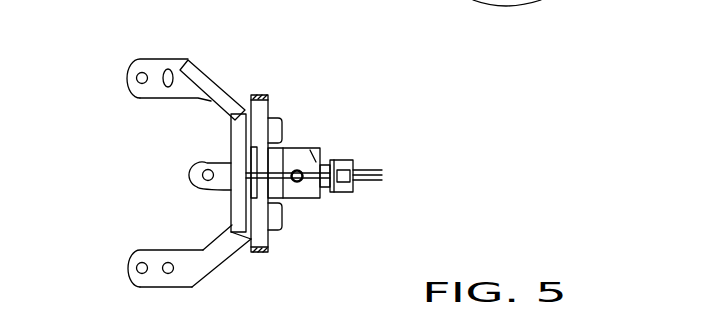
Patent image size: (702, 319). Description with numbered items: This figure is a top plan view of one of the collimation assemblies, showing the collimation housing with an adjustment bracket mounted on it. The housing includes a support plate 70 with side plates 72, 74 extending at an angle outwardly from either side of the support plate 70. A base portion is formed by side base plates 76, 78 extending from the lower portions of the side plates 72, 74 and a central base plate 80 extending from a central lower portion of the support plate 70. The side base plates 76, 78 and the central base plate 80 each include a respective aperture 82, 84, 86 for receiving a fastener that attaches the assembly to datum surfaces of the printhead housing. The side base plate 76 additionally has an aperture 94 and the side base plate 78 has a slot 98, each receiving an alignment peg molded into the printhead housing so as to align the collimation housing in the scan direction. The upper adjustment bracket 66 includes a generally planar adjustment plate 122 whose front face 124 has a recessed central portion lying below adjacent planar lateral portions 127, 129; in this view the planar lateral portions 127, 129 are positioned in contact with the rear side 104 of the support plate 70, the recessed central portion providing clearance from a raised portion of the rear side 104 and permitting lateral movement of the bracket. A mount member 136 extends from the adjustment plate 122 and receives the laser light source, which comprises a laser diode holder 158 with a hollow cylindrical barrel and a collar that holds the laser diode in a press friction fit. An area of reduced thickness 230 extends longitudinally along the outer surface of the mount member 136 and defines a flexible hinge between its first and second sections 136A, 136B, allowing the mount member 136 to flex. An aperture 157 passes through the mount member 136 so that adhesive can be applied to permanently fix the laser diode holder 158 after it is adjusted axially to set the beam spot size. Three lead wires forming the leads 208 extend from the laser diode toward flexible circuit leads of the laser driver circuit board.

The upper adjustment bracket 66 is at (289, 254).
The support plate 70 is at (195, 206).
The side plate 72 is at (164, 228).
The side plate 74 is at (212, 60).
The side base plate 76 is at (135, 281).
The side base plate 78 is at (140, 53).
The central base plate 80 is at (168, 168).
The aperture 82 is at (106, 255).
The aperture 84 is at (105, 67).
The aperture 86 is at (201, 158).
The aperture 94 is at (130, 240).
The slot 98 is at (150, 45).
The rear side 104 is at (332, 193).
The adjustment plate 122 is at (275, 126).
The front face 124 is at (168, 165).
The planar lateral portion 127 is at (252, 72).
The planar lateral portion 129 is at (247, 252).
The mount member 136 is at (337, 120).
The first section 136A is at (386, 211).
The second section 136B is at (378, 95).
The aperture 157 is at (297, 183).
The laser diode holder 158 is at (391, 116).
The leads 208 is at (358, 170).
The area of reduced thickness 230 is at (328, 81).